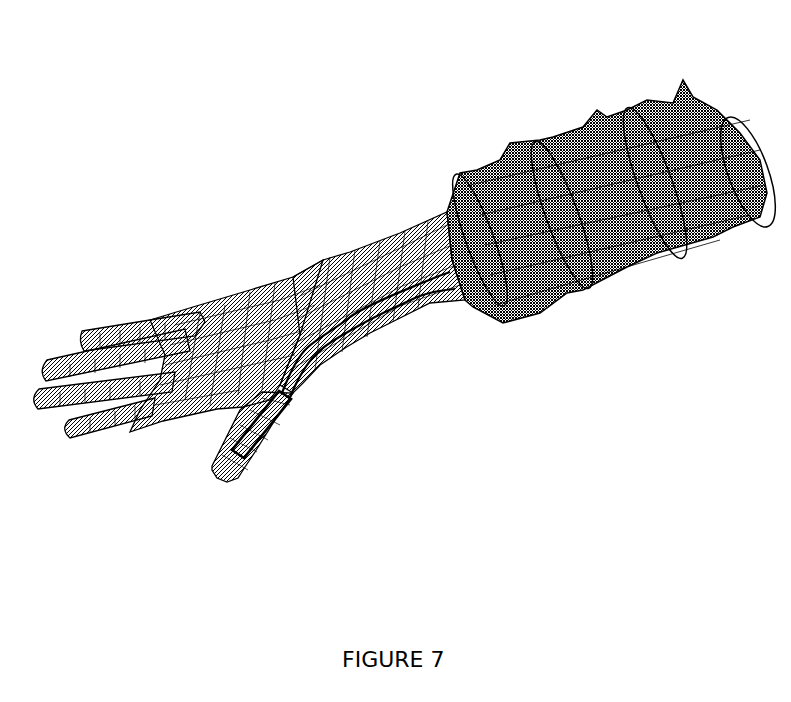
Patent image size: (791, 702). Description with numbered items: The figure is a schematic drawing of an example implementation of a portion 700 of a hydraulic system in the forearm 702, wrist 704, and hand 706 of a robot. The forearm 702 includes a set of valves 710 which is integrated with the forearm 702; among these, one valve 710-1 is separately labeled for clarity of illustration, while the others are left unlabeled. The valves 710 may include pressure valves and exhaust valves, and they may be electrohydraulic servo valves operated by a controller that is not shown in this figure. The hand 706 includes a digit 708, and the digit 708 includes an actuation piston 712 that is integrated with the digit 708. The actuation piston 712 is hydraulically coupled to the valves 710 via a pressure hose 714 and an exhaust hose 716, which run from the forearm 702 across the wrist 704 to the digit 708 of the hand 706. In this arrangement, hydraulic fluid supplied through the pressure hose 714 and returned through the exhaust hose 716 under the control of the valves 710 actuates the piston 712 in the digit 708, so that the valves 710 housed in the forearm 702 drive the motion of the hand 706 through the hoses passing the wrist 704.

The portion of a hydraulic system 700 is at (77, 61).
The forearm 702 is at (493, 105).
The wrist 704 is at (305, 237).
The hand 706 is at (160, 242).
The digit 708 is at (240, 463).
The set of valves 710 is at (627, 333).
The valve 710-1 is at (445, 198).
The actuation piston 712 is at (267, 425).
The pressure hose 714 is at (383, 322).
The exhaust hose 716 is at (420, 283).